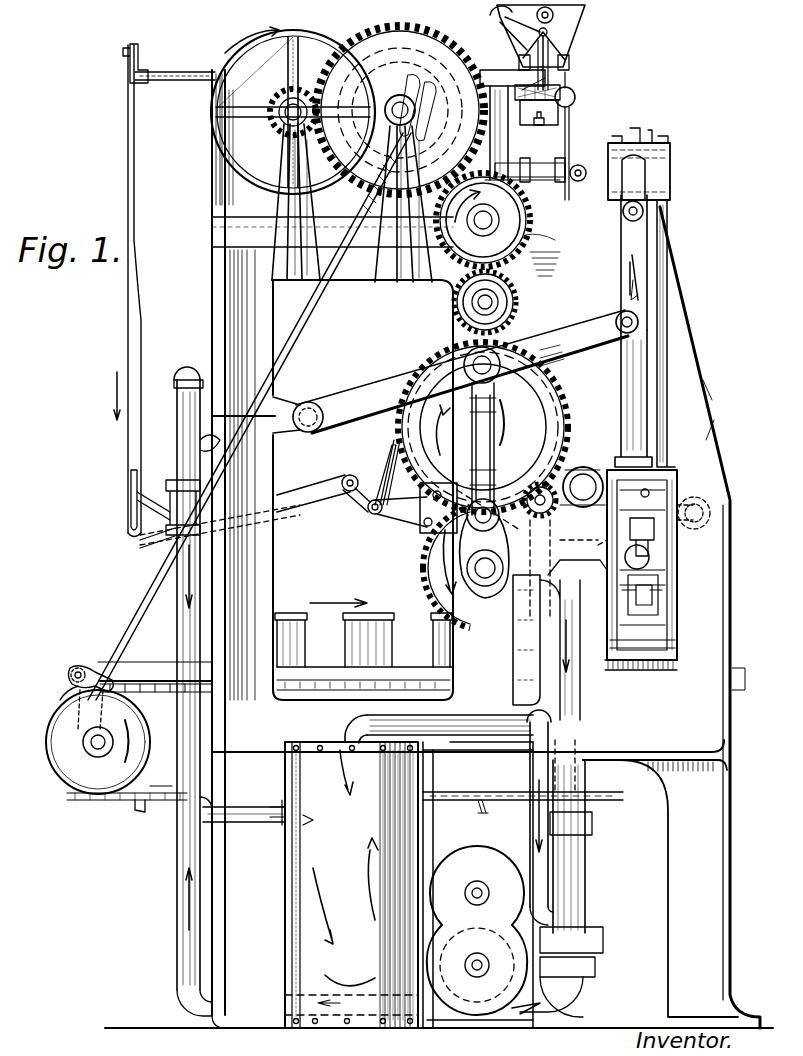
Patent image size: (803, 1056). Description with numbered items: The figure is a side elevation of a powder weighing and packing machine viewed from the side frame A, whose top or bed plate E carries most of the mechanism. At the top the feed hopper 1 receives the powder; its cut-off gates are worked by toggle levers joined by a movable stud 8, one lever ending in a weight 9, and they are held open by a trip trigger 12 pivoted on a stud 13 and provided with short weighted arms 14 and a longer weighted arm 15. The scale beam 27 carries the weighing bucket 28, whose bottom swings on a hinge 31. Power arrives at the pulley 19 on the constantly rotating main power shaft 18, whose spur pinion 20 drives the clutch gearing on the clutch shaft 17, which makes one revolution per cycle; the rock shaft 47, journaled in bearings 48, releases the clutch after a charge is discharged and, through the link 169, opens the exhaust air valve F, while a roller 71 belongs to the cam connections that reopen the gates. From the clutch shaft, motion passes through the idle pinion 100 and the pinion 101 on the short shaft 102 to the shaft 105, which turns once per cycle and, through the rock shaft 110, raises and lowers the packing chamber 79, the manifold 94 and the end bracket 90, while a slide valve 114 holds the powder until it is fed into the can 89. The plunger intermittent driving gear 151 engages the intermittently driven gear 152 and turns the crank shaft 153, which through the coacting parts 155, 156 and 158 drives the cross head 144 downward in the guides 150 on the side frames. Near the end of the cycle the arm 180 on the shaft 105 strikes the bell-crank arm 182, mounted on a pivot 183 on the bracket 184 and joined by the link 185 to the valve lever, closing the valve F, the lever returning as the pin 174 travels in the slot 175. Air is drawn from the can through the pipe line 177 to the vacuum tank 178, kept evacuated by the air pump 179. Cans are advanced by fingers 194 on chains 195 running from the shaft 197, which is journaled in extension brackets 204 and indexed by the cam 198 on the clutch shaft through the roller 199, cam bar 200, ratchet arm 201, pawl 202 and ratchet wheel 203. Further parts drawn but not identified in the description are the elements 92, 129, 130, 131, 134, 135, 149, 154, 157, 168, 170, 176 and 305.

The feed hopper 1 is at (580, 38).
The movable stud 8 is at (548, 36).
The weight 9 is at (500, 18).
The trip trigger 12 is at (552, 70).
The stud 13 is at (565, 80).
The short weighted arms 14 is at (576, 97).
The longer weighted arm 15 is at (538, 120).
The clutch shaft 17 is at (386, 106).
The main power shaft 18 is at (268, 80).
The pulley 19 is at (322, 36).
The spur pinion 20 is at (284, 120).
The scale beam 27 is at (560, 125).
The weighing bucket 28 is at (558, 158).
The hinge 31 is at (712, 445).
The rock shaft 47 is at (180, 82).
The bearings 48 is at (222, 178).
The roller 71 is at (563, 290).
The packing chamber 79 is at (652, 553).
The can 89 is at (345, 637).
The end bracket 90 is at (665, 575).
The plate 92 is at (670, 640).
The manifold 94 is at (708, 527).
The idle pinion 100 is at (462, 230).
The pinion 101 is at (455, 304).
The short shaft 102 is at (475, 306).
The shaft 105 is at (495, 385).
The rock shaft 110 is at (595, 478).
The slide valve 114 is at (660, 598).
The pin 129 is at (487, 498).
The pinion 130 is at (548, 512).
The rod 131 is at (548, 540).
The bracket 134 is at (518, 650).
The duct 135 is at (515, 672).
The cross head 144 is at (672, 152).
The pillar 149 is at (648, 178).
The guides 150 is at (650, 372).
The plunger intermittent driving gear 151 is at (420, 370).
The intermittently driven gear 152 is at (428, 592).
The crank shaft 153 is at (483, 585).
The plate 154 is at (435, 530).
The coacting part 155 is at (392, 444).
The coacting part 156 is at (580, 336).
The pivot 157 is at (307, 402).
The coacting part 158 is at (642, 280).
The bracket 168 is at (142, 58).
The link 169 is at (128, 318).
The bracket 170 is at (172, 480).
The pin 174 is at (131, 476).
The slot 175 is at (131, 498).
The collar 176 is at (200, 442).
The pipe line 177 is at (178, 395).
The vacuum tank 178 is at (344, 885).
The air pump 179 is at (478, 885).
The arm 180 is at (517, 408).
The bell-crank arm 182 is at (380, 480).
The pivot 183 is at (372, 515).
The bracket 184 is at (400, 515).
The link 185 is at (280, 508).
The fingers 194 is at (138, 812).
The chains 195 is at (170, 800).
The shaft 197 is at (98, 748).
The cam 198 is at (440, 48).
The roller 199 is at (412, 144).
The cam bar 200 is at (300, 293).
The ratchet arm 201 is at (68, 690).
The pawl 202 is at (80, 665).
The ratchet wheel 203 is at (62, 778).
The extension brackets 204 is at (150, 702).
The hatch 305 is at (600, 670).
The side frame A is at (685, 858).
The top or bed plate E is at (222, 227).
The exhaust air valve F is at (150, 543).